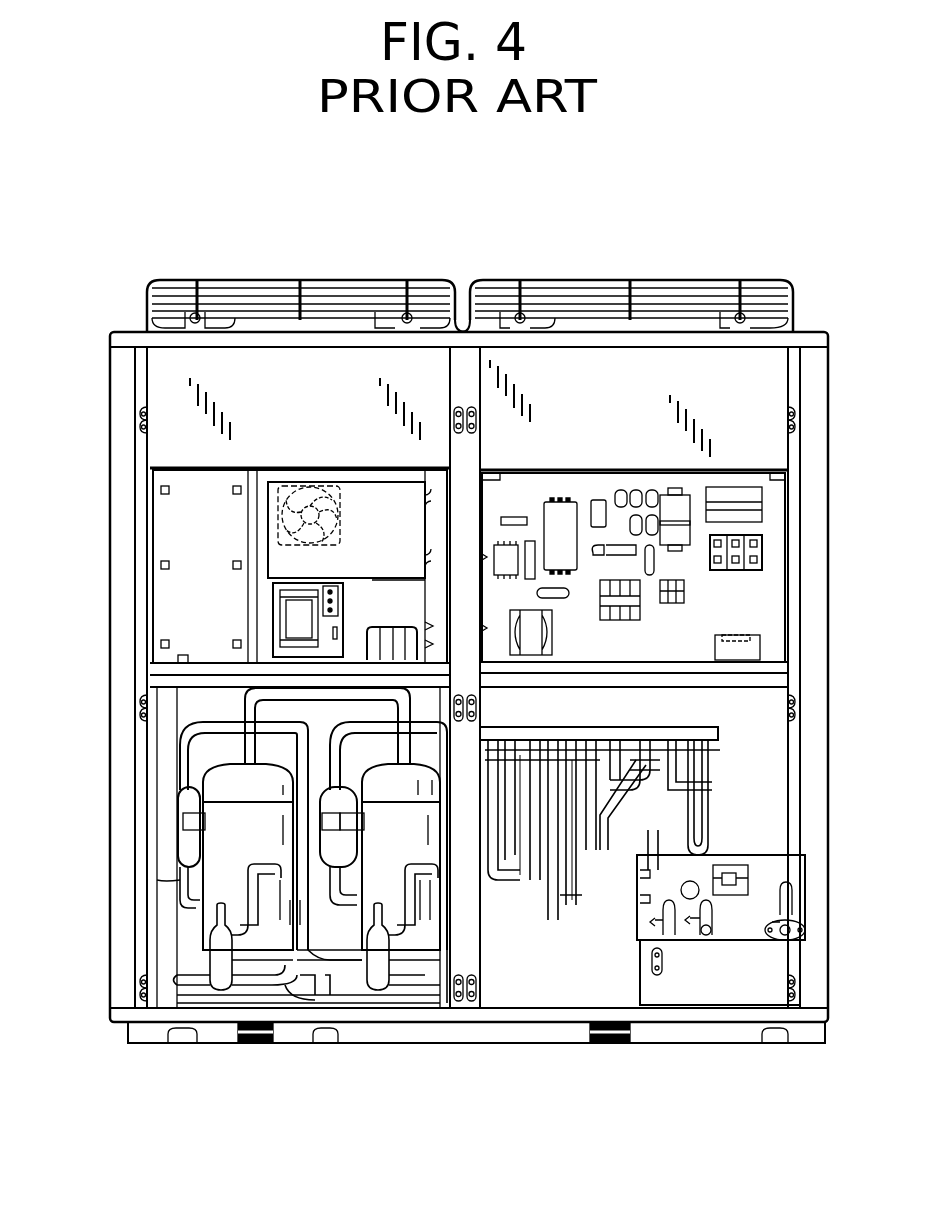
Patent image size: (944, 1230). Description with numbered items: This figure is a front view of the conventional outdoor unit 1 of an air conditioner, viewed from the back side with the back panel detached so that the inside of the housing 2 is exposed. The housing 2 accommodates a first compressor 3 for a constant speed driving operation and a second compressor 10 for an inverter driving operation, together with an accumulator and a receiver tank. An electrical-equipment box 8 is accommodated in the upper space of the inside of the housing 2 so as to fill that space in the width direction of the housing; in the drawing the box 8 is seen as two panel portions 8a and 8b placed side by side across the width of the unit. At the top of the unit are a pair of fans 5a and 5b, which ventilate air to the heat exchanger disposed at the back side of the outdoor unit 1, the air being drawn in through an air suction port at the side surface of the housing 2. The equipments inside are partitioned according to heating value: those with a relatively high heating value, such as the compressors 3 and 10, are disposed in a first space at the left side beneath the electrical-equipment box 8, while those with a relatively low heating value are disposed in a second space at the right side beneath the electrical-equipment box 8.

The outdoor unit 1 is at (160, 272).
The housing 2 is at (118, 412).
The first compressor 3 is at (210, 873).
The fan 5a is at (292, 282).
The fan 5b is at (546, 278).
The electrical-equipment box 8 is at (518, 482).
The electric component panel 8a is at (180, 600).
The printed circuit board 8b is at (740, 592).
The second compressor 10 is at (428, 940).